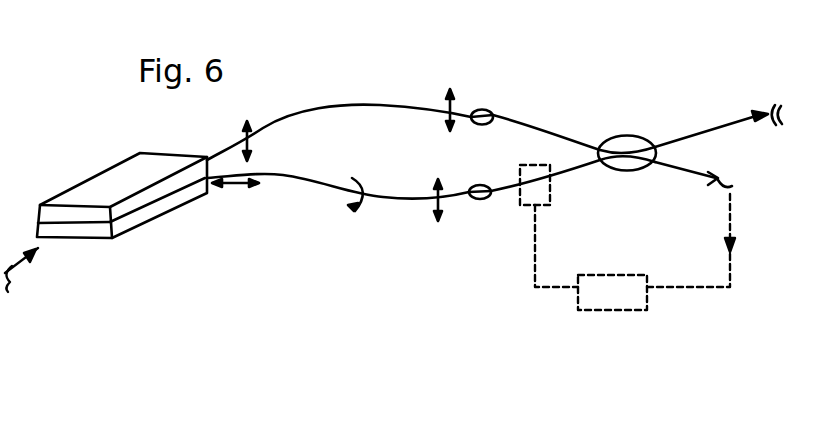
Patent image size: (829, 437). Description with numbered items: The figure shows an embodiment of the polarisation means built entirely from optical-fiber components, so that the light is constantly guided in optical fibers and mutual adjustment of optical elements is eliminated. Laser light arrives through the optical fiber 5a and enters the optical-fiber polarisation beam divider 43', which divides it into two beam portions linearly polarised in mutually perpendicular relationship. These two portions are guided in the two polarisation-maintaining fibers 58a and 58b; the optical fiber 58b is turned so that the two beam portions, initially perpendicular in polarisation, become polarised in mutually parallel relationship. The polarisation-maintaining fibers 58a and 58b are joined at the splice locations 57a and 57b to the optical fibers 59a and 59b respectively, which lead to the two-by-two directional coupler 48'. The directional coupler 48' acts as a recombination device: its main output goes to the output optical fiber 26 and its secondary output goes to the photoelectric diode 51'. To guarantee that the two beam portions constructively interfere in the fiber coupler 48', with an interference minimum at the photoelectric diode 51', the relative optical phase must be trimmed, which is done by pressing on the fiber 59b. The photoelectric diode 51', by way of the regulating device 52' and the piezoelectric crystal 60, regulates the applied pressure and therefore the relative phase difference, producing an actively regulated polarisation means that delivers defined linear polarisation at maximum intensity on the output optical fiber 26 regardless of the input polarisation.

The optical-fiber polarisation beam divider 43' is at (122, 175).
The optical fiber 5a is at (72, 230).
The polarisation-maintaining fiber 58a is at (303, 115).
The polarisation-maintaining fiber 58b is at (313, 183).
The splice location 57a is at (483, 110).
The splice location 57b is at (477, 200).
The optical fiber 59a is at (528, 125).
The optical fiber 59b is at (573, 172).
The 2×2-directional coupler 48' is at (641, 92).
The optical fiber 26 is at (687, 133).
The photoelectric diode 51' is at (730, 173).
The piezoelectric crystal 60 is at (525, 207).
The regulating device 52' is at (656, 293).